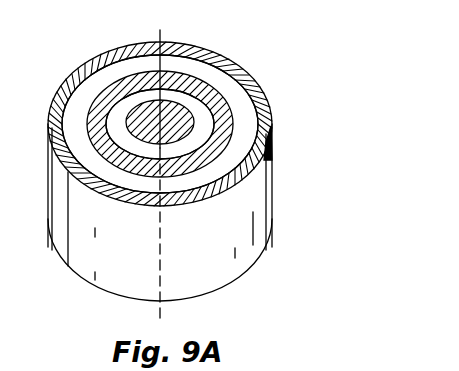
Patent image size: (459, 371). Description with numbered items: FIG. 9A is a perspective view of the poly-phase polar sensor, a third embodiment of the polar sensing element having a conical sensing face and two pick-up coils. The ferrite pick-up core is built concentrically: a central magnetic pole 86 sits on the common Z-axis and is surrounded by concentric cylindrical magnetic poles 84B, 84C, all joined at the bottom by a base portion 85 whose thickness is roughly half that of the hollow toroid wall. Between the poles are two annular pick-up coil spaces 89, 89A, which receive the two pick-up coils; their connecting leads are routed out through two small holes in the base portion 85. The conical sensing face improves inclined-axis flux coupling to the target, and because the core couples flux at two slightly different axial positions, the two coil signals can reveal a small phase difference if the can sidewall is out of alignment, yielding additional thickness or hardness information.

The intermediate annular layer 84B is at (220, 98).
The outer annular layer 84C is at (271, 107).
The base portion 85 is at (272, 220).
The central magnetic pole 86 is at (150, 128).
The pick-up coil space 89 is at (127, 107).
The pick-up coil space 89A is at (215, 52).